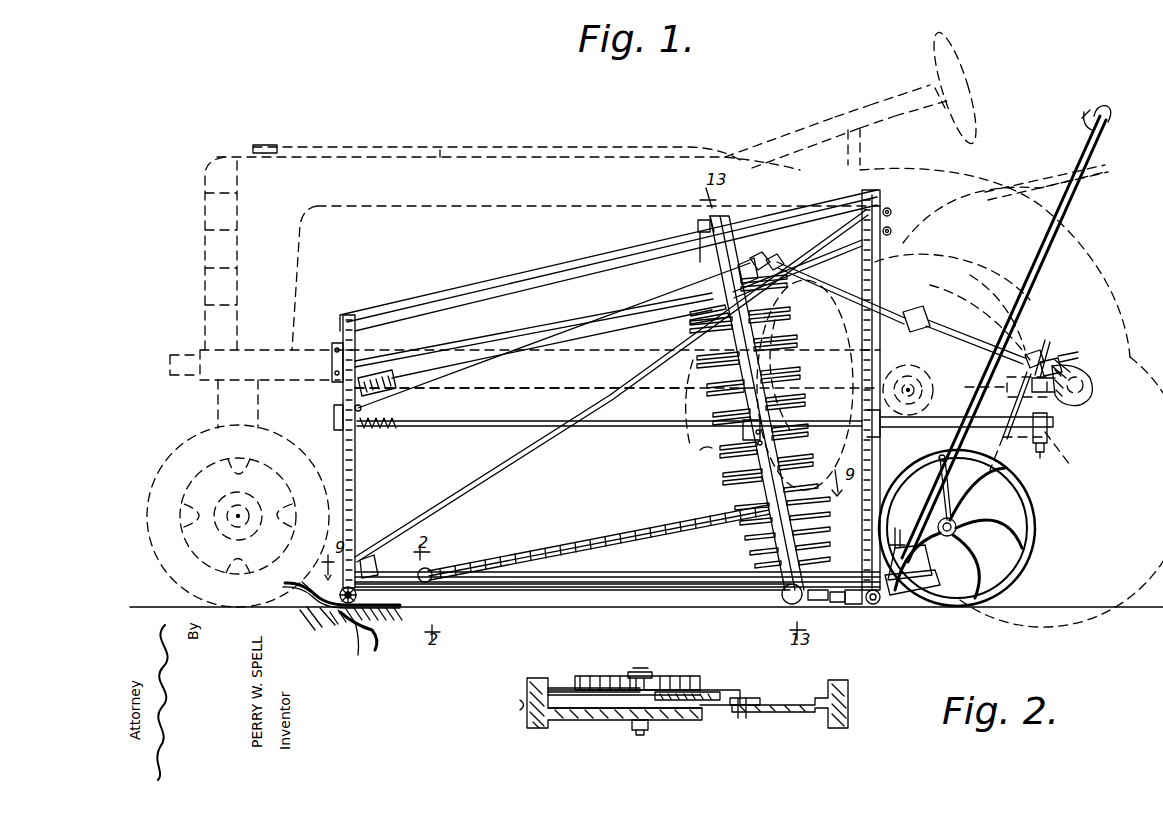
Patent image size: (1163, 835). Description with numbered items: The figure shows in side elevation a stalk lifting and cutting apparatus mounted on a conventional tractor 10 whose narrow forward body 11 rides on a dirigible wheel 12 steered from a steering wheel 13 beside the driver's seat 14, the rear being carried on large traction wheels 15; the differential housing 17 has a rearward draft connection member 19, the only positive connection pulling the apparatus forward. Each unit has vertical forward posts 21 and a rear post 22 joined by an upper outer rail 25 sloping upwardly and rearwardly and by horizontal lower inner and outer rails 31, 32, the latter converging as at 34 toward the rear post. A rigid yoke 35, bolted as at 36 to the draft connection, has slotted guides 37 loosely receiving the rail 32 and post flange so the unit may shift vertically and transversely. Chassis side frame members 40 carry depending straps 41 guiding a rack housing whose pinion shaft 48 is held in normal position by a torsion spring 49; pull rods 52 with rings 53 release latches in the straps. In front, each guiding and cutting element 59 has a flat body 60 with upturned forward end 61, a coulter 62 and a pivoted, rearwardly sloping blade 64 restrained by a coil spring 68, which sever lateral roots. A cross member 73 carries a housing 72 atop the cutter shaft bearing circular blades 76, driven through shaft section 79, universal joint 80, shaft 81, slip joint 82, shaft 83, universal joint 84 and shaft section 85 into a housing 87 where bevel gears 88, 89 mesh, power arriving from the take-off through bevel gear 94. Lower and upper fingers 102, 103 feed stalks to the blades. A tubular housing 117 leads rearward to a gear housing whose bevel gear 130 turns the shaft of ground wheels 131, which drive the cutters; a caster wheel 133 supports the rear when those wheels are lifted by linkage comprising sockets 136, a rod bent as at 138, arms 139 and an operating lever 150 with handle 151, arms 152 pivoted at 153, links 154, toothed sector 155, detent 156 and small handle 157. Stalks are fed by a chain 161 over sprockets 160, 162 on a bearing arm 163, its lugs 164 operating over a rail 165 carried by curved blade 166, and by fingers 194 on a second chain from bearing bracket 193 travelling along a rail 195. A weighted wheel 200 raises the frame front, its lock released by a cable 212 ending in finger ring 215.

In FIG. 1, the tractor 10 is at (578, 150).
In FIG. 1, the forward body 11 is at (446, 150).
In FIG. 1, the dirigible wheel 12 is at (190, 438).
In FIG. 1, the steering wheel 13 is at (960, 63).
In FIG. 1, the driver's seat 14 is at (1015, 175).
In FIG. 1, the traction wheels 15 is at (1115, 478).
In FIG. 1, the differential housing 17 is at (905, 313).
In FIG. 1, the draft connection member 19 is at (1070, 453).
In FIG. 1, the forward posts 21 is at (357, 497).
In FIG. 1, the rear post 22 is at (882, 352).
In FIG. 1, the upper outer rail 25 is at (528, 270).
In FIG. 2, the lower inner rail 31 is at (522, 712).
In FIG. 1, the lower outer rail 32 is at (668, 572).
In FIG. 2, the lower outer rail 32 is at (850, 716).
In FIG. 1, the converging portion of outer rail 34 is at (874, 605).
In FIG. 1, the yoke 35 is at (1062, 420).
In FIG. 1, the bolt connection 36 is at (1075, 403).
In FIG. 1, the slotted guides 37 is at (862, 430).
In FIG. 1, the side frame members 40 is at (592, 392).
In FIG. 1, the depending strap 41 is at (334, 414).
In FIG. 1, the shaft 48 is at (445, 430).
In FIG. 1, the torsion spring 49 is at (385, 432).
In FIG. 1, the pull rods 52 is at (497, 357).
In FIG. 1, the rings 53 is at (891, 210).
In FIG. 1, the guiding and cutting element 59 is at (300, 582).
In FIG. 1, the body portion 60 is at (398, 625).
In FIG. 1, the forward end 61 is at (282, 585).
In FIG. 1, the coulter 62 is at (352, 630).
In FIG. 1, the blade 64 is at (362, 655).
In FIG. 1, the coil spring 68 is at (381, 559).
In FIG. 1, the housing 72 is at (738, 250).
In FIG. 1, the cross member 73 is at (698, 224).
In FIG. 1, the circular cutting blades 76 is at (725, 452).
In FIG. 1, the shaft section 79 is at (760, 253).
In FIG. 1, the universal joint 80 is at (780, 257).
In FIG. 1, the shaft 81 is at (792, 268).
In FIG. 1, the slip joint 82 is at (935, 310).
In FIG. 1, the shaft 83 is at (992, 332).
In FIG. 1, the universal joint 84 is at (1050, 340).
In FIG. 1, the shaft section 85 is at (1058, 358).
In FIG. 1, the housing 87 is at (1092, 376).
In FIG. 1, the bevel gear 88 is at (1069, 358).
In FIG. 1, the bevel gear 89 is at (1105, 325).
In FIG. 1, the bevel gear 94 is at (1010, 421).
In FIG. 1, the lower fingers 102 is at (800, 310).
In FIG. 1, the upper fingers 103 is at (795, 345).
In FIG. 1, the tubular housing 117 is at (848, 565).
In FIG. 1, the bevel gear 130 is at (730, 305).
In FIG. 1, the wheels 131 is at (1032, 506).
In FIG. 1, the caster wheel 133 is at (858, 604).
In FIG. 1, the sockets 136 is at (790, 606).
In FIG. 1, the bent portion 138 is at (818, 600).
In FIG. 1, the arms 139 is at (930, 548).
In FIG. 1, the operating lever 150 is at (1079, 218).
In FIG. 1, the handle 151 is at (1114, 110).
In FIG. 1, the arms 152 is at (985, 390).
In FIG. 1, the pivot connection 153 is at (930, 555).
In FIG. 1, the link 154 is at (958, 527).
In FIG. 1, the toothed sector 155 is at (908, 520).
In FIG. 1, the detent 156 is at (938, 470).
In FIG. 1, the small handle 157 is at (1086, 112).
In FIG. 2, the sprocket 160 is at (640, 670).
In FIG. 1, the chain 161 is at (630, 540).
In FIG. 2, the chain 161 is at (578, 676).
In FIG. 1, the sprocket 162 is at (450, 570).
In FIG. 1, the bearing arm 163 is at (452, 590).
In FIG. 2, the bearing arm 163 is at (600, 720).
In FIG. 1, the lugs 164 is at (564, 552).
In FIG. 2, the lugs 164 is at (556, 685).
In FIG. 1, the rail 165 is at (660, 580).
In FIG. 2, the rail 165 is at (732, 695).
In FIG. 2, the curved blade 166 is at (755, 700).
In FIG. 1, the bearing bracket 193 is at (398, 387).
In FIG. 1, the fingers 194 is at (332, 378).
In FIG. 1, the rail 195 is at (589, 314).
In FIG. 1, the wheel 200 is at (338, 585).
In FIG. 1, the flexible cable 212 is at (515, 462).
In FIG. 1, the finger ring 215 is at (891, 230).